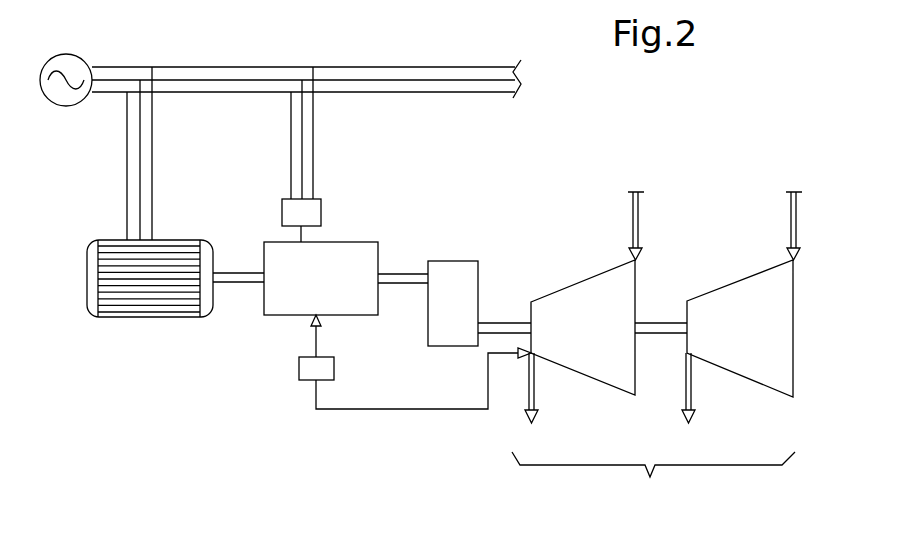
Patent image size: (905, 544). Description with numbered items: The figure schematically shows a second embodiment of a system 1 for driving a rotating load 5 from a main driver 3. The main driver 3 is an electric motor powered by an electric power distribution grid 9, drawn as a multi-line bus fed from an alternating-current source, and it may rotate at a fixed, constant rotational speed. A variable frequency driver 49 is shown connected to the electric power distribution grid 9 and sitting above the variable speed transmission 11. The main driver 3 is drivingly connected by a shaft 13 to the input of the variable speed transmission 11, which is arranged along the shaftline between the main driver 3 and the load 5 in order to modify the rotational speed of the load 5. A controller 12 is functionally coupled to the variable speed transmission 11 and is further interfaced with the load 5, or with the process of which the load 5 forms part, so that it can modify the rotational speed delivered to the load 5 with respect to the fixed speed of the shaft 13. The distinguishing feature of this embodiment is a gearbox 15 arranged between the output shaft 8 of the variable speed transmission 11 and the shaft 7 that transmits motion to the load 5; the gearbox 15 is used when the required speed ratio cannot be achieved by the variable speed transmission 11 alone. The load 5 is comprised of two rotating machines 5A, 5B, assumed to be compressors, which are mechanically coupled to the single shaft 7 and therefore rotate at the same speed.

The system 1 is at (568, 150).
The main driver 3 is at (142, 305).
The rotating load 5 is at (653, 477).
The rotating machine 5A is at (593, 297).
The rotating machine 5B is at (748, 295).
The shaft 7 is at (508, 326).
The output shaft 8 is at (403, 277).
The electric power distribution grid 9 is at (220, 92).
The variable speed transmission 11 is at (352, 303).
The controller 12 is at (305, 367).
The shaft 13 is at (243, 284).
The gearbox 15 is at (468, 262).
The variable frequency driver 49 is at (283, 213).